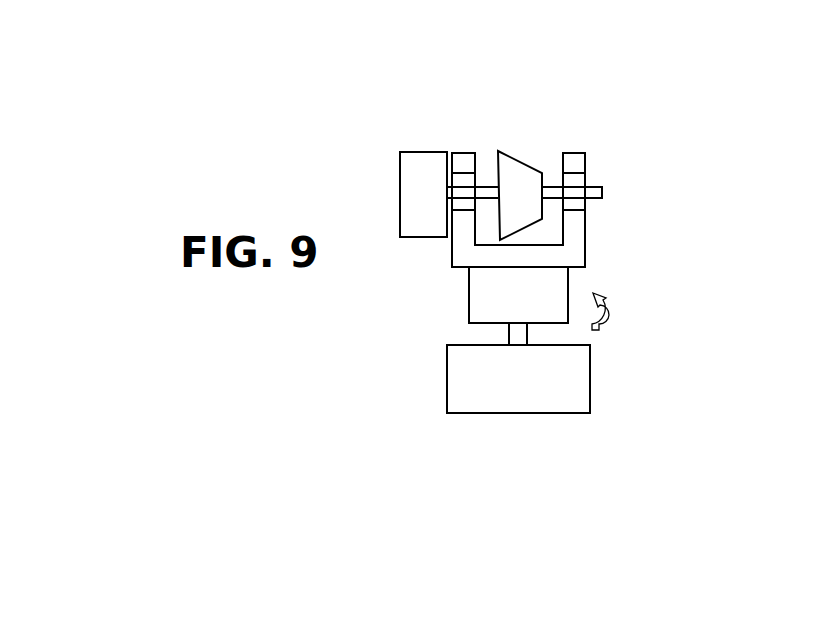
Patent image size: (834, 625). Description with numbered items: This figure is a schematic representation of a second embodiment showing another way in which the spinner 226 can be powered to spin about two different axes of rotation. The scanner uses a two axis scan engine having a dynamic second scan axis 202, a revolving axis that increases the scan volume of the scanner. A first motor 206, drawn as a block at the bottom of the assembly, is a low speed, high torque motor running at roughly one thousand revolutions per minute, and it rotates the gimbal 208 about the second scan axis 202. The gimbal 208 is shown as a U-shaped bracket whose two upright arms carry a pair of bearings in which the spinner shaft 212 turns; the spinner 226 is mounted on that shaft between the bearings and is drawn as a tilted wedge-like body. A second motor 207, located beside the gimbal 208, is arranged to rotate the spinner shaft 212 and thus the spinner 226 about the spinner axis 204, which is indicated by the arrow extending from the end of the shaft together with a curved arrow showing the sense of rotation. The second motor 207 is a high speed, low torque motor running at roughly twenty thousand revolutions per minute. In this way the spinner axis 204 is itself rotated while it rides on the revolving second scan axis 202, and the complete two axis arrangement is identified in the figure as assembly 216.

The dynamic second scan axis 202 is at (505, 333).
The spinner axis 204 is at (602, 193).
The first motor 206 is at (447, 381).
The second motor 207 is at (400, 183).
The gimbal 208 is at (588, 248).
The spinner shaft 212 is at (597, 183).
The mirror assembly 216 is at (668, 345).
The spinner 226 is at (513, 165).
The element bearings is at (552, 168).